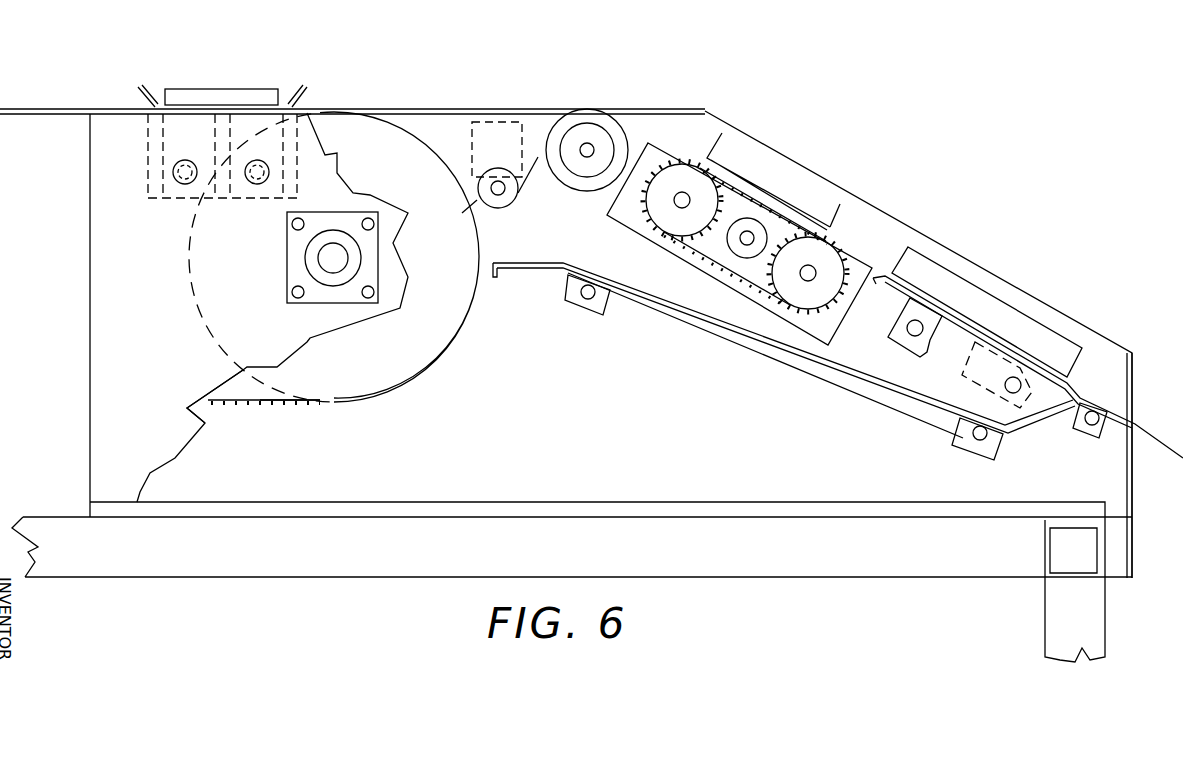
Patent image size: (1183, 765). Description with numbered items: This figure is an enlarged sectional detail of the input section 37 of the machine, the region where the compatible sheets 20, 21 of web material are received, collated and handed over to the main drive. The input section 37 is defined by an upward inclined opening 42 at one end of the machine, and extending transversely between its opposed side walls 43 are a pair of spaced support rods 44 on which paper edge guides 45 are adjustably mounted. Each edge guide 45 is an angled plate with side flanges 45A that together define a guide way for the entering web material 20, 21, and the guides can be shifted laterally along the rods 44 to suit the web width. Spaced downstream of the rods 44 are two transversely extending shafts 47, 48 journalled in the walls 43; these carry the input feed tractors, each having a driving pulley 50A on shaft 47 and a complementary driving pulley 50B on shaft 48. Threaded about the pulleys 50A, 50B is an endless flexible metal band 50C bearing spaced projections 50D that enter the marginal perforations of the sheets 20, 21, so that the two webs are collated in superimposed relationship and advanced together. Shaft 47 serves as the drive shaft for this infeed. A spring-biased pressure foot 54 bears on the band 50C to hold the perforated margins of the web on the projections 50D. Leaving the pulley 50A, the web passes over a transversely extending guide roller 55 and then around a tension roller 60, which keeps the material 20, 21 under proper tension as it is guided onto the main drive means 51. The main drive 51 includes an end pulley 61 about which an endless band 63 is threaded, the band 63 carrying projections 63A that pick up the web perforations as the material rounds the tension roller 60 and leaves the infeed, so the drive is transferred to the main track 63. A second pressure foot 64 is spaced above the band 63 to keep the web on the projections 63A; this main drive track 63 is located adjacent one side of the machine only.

The sheet of web material 20 is at (538, 157).
The sheet of web material 21 is at (517, 147).
The input section 37 is at (800, 134).
The upward inclined opening 42 is at (1132, 393).
The side wall 43 is at (927, 245).
The support rod 44 is at (915, 336).
The paper edge guide 45 is at (1000, 340).
The side flange 45A is at (975, 295).
The shaft 47 is at (680, 202).
The shaft 48 is at (810, 275).
The driving pulley 50A is at (675, 178).
The driving pulley 50B is at (833, 253).
The metal band 50C is at (803, 227).
The projection 50D is at (780, 212).
The main drive means 51 is at (255, 410).
The pressure foot 54 is at (718, 162).
The guide roller 55 is at (603, 122).
The tension roller 60 is at (507, 200).
The end pulley 61 is at (425, 332).
The endless band 63 is at (227, 405).
The projection 63A is at (272, 405).
The pressure foot 64 is at (257, 95).